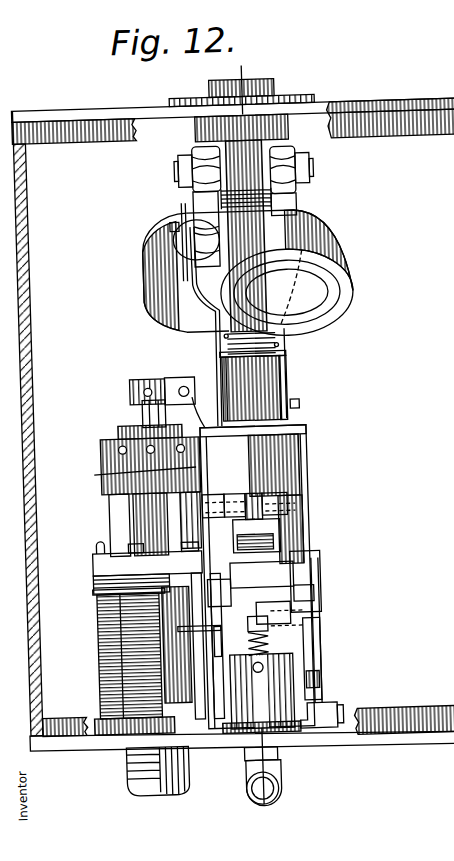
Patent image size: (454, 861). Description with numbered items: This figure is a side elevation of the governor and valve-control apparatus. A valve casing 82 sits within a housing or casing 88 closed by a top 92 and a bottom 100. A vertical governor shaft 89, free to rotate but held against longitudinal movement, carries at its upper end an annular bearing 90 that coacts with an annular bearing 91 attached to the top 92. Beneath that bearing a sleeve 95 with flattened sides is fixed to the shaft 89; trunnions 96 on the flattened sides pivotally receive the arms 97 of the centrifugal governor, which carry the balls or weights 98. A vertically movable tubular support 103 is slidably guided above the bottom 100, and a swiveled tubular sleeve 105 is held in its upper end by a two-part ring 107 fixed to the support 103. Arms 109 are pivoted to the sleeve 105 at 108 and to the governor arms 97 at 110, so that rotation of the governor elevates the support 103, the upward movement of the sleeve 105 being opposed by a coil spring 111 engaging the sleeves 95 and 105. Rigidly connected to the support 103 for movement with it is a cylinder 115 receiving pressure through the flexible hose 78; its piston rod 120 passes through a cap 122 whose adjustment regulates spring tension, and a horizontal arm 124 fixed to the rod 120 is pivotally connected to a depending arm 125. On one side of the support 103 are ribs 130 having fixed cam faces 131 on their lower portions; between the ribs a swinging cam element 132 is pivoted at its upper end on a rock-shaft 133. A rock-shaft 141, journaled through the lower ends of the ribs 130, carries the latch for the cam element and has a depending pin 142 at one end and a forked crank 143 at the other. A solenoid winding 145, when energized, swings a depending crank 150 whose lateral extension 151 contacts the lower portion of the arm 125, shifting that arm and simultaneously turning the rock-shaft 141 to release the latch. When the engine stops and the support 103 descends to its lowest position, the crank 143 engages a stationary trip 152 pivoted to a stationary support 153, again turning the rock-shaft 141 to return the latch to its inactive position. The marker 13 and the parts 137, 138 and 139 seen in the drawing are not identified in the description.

The section line / pivot lug 13 is at (251, 67).
The flexible hose 78 is at (118, 771).
The valve casing 82 is at (286, 698).
The housing 88 is at (35, 333).
The vertical shaft 89 is at (230, 344).
The annular bearing 90 is at (285, 88).
The annular bearing 91 is at (298, 129).
The top of the housing 92 is at (408, 106).
The sleeve 95 is at (321, 166).
The trunnions 96 is at (321, 174).
The arms 97 is at (200, 199).
The balls or weights 98 is at (160, 257).
The bottom of the housing 100 is at (361, 739).
The tubular support 103 is at (310, 470).
The swiveled tubular sleeve 105 is at (284, 380).
The two-part ring 107 is at (306, 434).
The pivotal connection 108 is at (300, 405).
The arms 109 is at (226, 361).
The pivotal connection 110 is at (176, 226).
The compressible coil spring 111 is at (217, 336).
The cylinder 115 is at (110, 500).
The piston rod 120 is at (147, 411).
The cap 122 is at (108, 456).
The horizontal arm 124 is at (147, 378).
The depending arm 125 is at (129, 473).
The ribs 130 is at (286, 517).
The fixed cam faces 131 is at (278, 532).
The swinging cam element 132 is at (262, 499).
The rock-shaft 133 is at (303, 486).
The crosshead 137 is at (290, 574).
The spring 138 is at (288, 643).
The insert 139 is at (272, 546).
The rock-shaft 141 is at (318, 585).
The depending crank or pin 142 is at (120, 645).
The forked crank 143 is at (298, 613).
The solenoid winding 145 is at (92, 609).
The depending crank 150 is at (90, 592).
The lateral extension 151 is at (90, 574).
The stationary trip 152 is at (314, 630).
The stationary support 153 is at (322, 681).